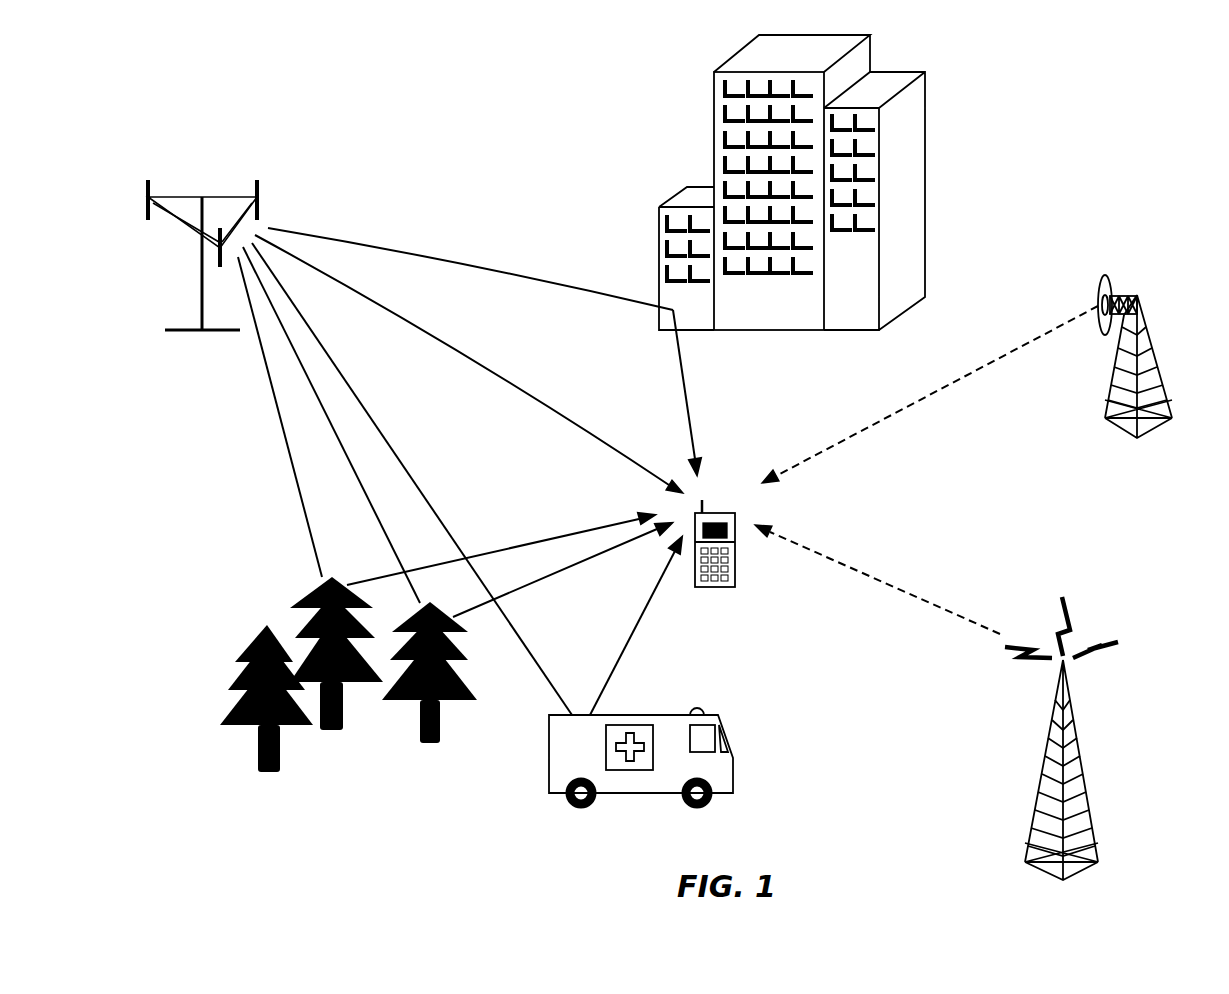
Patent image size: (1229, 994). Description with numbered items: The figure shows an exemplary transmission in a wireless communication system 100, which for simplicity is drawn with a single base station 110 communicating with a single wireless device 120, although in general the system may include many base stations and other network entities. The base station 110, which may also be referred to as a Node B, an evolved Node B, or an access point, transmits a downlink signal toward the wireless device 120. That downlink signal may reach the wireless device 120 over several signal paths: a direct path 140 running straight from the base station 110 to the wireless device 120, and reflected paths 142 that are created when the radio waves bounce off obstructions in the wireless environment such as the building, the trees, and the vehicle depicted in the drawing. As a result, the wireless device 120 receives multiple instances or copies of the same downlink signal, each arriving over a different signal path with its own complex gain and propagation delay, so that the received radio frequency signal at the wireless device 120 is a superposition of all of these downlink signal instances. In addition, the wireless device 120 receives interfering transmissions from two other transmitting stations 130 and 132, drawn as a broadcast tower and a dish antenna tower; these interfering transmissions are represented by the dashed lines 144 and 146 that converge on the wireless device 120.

The wireless communication system 100 is at (378, 176).
The base station 110 is at (197, 195).
The wireless device 120 is at (717, 512).
The transmitting station 130 is at (1087, 791).
The transmitting station 132 is at (1170, 387).
The direct path 140 is at (505, 381).
The reflected paths 142 is at (504, 271).
The dashed line 144 is at (891, 585).
The dashed line 146 is at (921, 400).